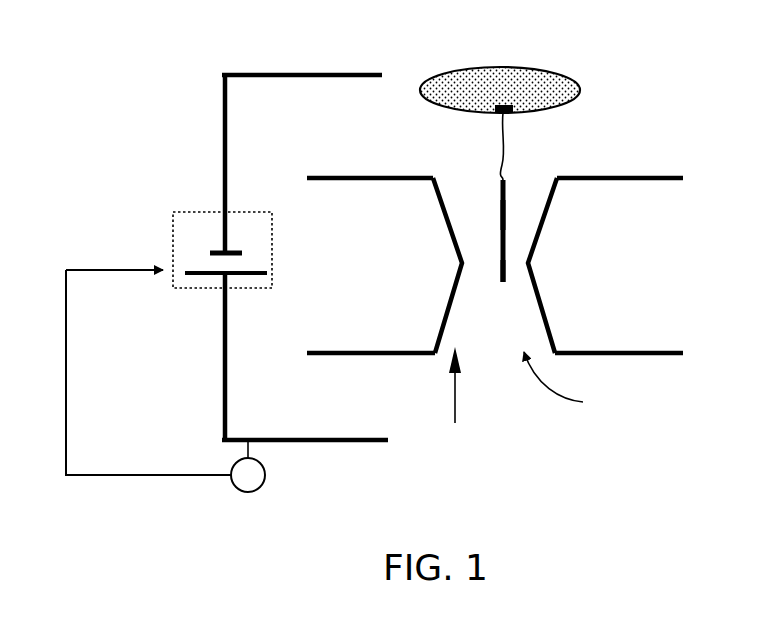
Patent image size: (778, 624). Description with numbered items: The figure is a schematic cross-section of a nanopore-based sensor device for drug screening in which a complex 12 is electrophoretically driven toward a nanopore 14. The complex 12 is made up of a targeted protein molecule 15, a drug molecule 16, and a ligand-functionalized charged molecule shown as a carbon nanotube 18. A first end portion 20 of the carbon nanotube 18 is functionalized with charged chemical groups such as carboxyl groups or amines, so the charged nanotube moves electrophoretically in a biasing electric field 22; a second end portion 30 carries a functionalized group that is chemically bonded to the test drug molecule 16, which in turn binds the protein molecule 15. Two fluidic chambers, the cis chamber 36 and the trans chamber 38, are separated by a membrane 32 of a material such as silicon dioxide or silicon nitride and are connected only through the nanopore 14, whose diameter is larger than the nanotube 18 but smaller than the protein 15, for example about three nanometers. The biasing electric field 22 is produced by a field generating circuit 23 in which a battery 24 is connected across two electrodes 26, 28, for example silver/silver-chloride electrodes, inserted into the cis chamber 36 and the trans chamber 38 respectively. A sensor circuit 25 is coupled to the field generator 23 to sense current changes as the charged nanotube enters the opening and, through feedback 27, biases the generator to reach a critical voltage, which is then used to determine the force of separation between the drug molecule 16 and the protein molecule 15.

The complex 12 is at (616, 157).
The nanopore 14 is at (567, 383).
The targeted protein molecule 15 is at (578, 83).
The drug molecule 16 is at (505, 113).
The carbon nanotube 18 is at (495, 208).
The first end portion 20 is at (510, 186).
The biasing electric field 22 is at (455, 402).
The electric field generator 23 is at (205, 302).
The battery 24 is at (200, 272).
The sensor circuit 25 is at (265, 470).
The electrode 26 is at (332, 73).
The feedback 27 is at (66, 398).
The electrode 28 is at (365, 442).
The second end portion 30 is at (499, 268).
The membrane 32 is at (683, 254).
The cis chamber 36 is at (683, 158).
The trans chamber 38 is at (683, 432).